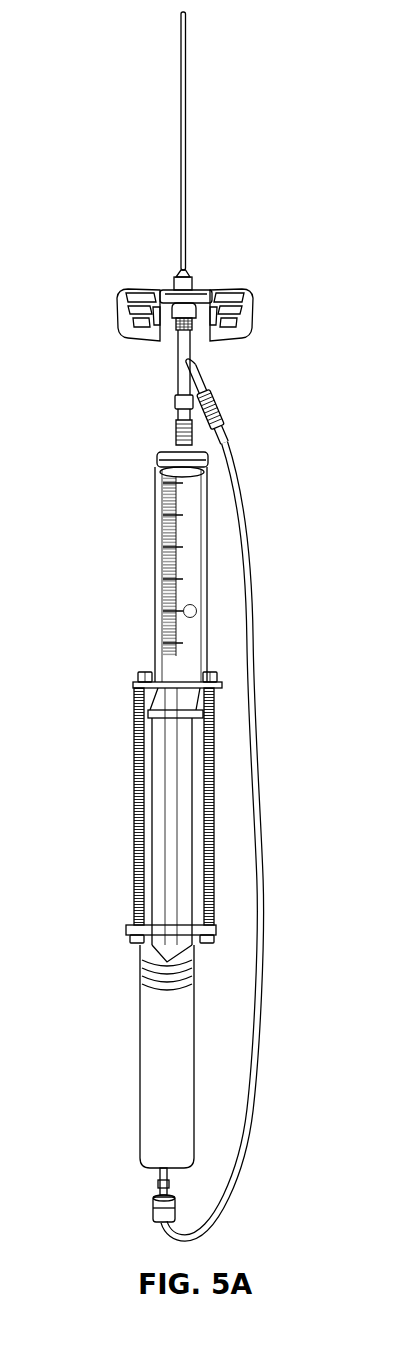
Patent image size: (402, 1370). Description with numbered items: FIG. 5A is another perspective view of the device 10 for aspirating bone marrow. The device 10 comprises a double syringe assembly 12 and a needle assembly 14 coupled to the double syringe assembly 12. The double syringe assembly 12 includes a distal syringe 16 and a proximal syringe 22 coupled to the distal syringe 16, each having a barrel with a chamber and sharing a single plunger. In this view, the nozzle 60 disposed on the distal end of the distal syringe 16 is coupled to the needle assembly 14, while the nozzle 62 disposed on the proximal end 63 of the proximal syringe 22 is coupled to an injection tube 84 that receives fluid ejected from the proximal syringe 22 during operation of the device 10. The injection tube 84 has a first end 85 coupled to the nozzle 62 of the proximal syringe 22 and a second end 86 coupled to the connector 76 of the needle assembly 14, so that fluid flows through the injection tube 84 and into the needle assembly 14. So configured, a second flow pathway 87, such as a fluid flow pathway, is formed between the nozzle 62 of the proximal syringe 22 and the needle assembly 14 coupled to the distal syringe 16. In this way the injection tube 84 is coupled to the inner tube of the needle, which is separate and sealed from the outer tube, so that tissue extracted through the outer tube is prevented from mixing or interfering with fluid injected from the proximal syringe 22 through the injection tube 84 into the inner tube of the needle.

The device for aspirating bone marrow 10 is at (274, 158).
The double syringe assembly 12 is at (116, 815).
The needle assembly 14 is at (104, 287).
The distal syringe 16 is at (145, 577).
The proximal syringe 22 is at (130, 1079).
The nozzle 60 is at (176, 446).
The nozzle 62 is at (157, 1180).
The proximal end 63 is at (146, 1124).
The connector 76 is at (200, 378).
The injection tube 84 is at (257, 1042).
The first end 85 is at (167, 1236).
The second end 86 is at (229, 447).
The second flow pathway 87 is at (262, 792).